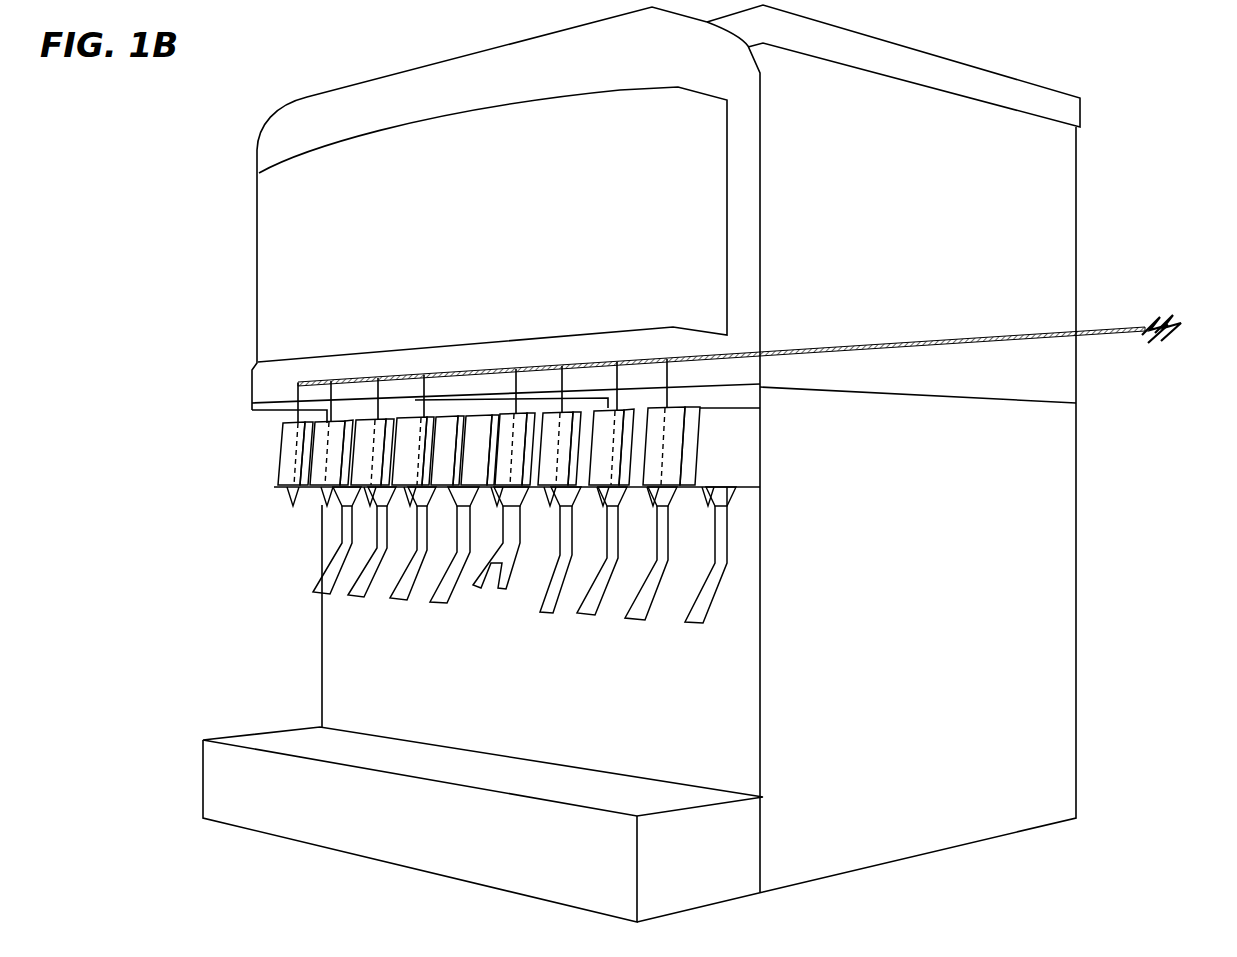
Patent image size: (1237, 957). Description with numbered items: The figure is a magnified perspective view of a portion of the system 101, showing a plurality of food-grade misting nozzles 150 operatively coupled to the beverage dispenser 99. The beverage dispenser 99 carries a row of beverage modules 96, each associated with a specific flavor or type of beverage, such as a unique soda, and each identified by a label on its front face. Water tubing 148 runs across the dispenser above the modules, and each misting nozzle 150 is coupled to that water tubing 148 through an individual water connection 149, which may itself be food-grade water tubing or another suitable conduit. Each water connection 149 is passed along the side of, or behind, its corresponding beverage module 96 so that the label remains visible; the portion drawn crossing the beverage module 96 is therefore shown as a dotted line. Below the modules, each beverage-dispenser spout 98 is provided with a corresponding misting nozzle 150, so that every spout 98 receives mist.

The system 101 is at (1166, 62).
The beverage dispenser 99 is at (1076, 221).
The water tubing 148 is at (898, 346).
The water connection 149 is at (668, 388).
The beverage module 96 is at (700, 438).
The beverage-dispenser spout 98 is at (693, 502).
The misting nozzle 150 is at (668, 503).